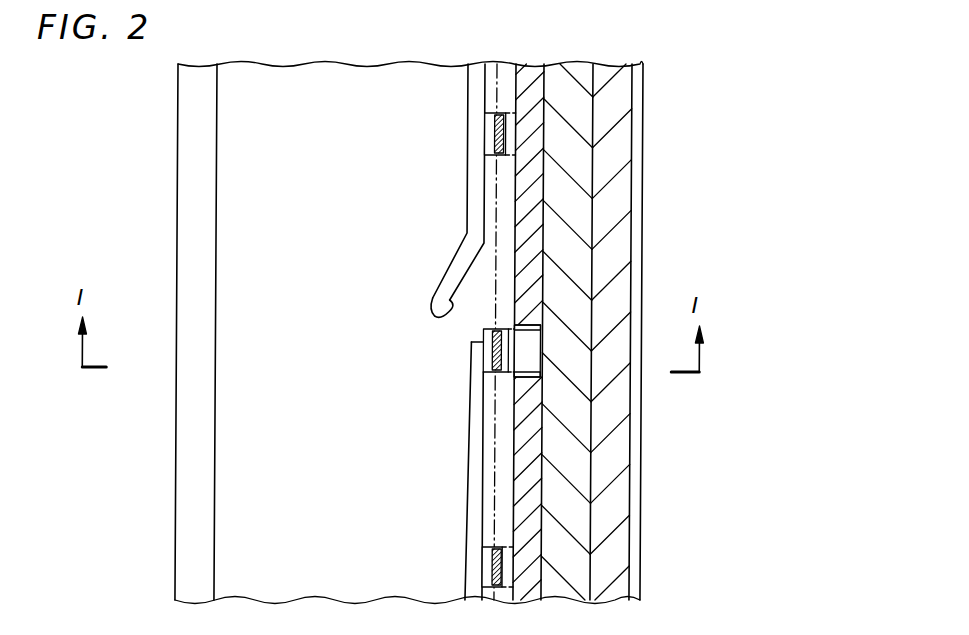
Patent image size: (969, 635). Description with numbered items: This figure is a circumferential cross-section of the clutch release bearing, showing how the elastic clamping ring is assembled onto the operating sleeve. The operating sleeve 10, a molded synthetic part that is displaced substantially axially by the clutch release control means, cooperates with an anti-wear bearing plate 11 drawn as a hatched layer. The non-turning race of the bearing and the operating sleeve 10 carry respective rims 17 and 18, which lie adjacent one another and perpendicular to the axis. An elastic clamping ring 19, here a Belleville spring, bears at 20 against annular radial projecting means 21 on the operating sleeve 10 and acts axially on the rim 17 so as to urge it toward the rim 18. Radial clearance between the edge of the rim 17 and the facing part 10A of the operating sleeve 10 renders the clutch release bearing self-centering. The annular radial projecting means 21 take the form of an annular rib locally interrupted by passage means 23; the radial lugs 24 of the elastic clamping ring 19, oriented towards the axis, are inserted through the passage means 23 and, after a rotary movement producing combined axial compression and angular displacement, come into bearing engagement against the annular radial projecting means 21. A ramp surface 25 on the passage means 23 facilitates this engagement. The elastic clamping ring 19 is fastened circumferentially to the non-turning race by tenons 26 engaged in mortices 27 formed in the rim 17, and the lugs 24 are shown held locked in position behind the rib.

The operating sleeve 10 is at (309, 331).
The part of the sleeve facing the rim edge 10A is at (521, 347).
The anti-wear bearing plate 11 is at (612, 67).
The rim of the non-turning race 17 is at (528, 80).
The rim of the operating sleeve 18 is at (568, 83).
The elastic clamping ring 19 is at (497, 181).
The bearing point of the elastic clamping ring 20 is at (486, 464).
The annular radial projecting means 21 is at (470, 436).
The passage means 23 is at (482, 361).
The radial lugs 24 is at (489, 133).
The ramp surface 25 is at (463, 323).
The tenons 26 is at (532, 318).
The mortices 27 is at (532, 366).